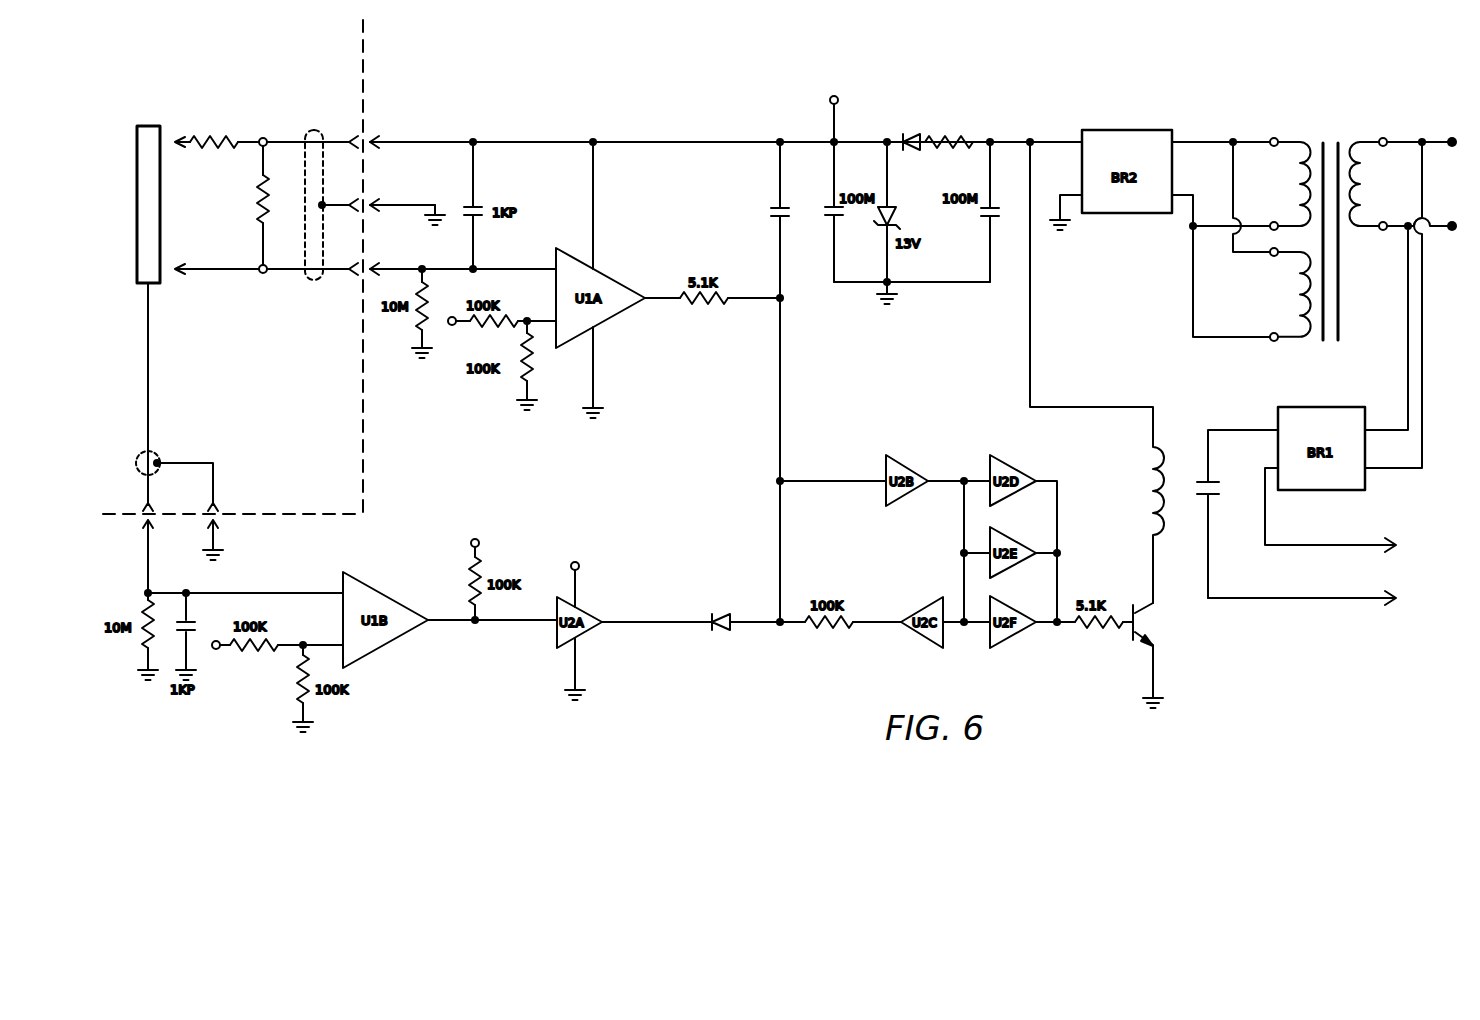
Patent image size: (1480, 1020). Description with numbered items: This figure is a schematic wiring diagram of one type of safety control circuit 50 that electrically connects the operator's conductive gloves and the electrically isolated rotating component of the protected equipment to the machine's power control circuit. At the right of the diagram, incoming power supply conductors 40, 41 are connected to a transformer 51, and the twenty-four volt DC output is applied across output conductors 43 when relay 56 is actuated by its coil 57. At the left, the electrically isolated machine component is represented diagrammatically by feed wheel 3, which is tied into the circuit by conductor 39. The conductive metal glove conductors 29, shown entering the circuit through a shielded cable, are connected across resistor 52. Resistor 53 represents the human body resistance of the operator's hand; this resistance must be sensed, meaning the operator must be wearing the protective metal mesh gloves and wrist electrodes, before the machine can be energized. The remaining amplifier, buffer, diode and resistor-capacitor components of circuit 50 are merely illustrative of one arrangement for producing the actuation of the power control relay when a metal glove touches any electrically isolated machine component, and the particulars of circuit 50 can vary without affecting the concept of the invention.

The feed wheel 3 is at (136, 207).
The conductive metal glove conductors 29 is at (410, 141).
The conductor 39 is at (149, 377).
The incoming power supply conductor 40 is at (1438, 141).
The incoming power supply conductor 41 is at (1436, 232).
The output conductors 43 is at (1320, 545).
The safety control circuit 50 is at (722, 106).
The transformer 51 is at (1338, 136).
The resistor 52 is at (255, 215).
The resistor 53 is at (211, 144).
The relay 56 is at (1218, 490).
The coil 57 is at (1148, 487).